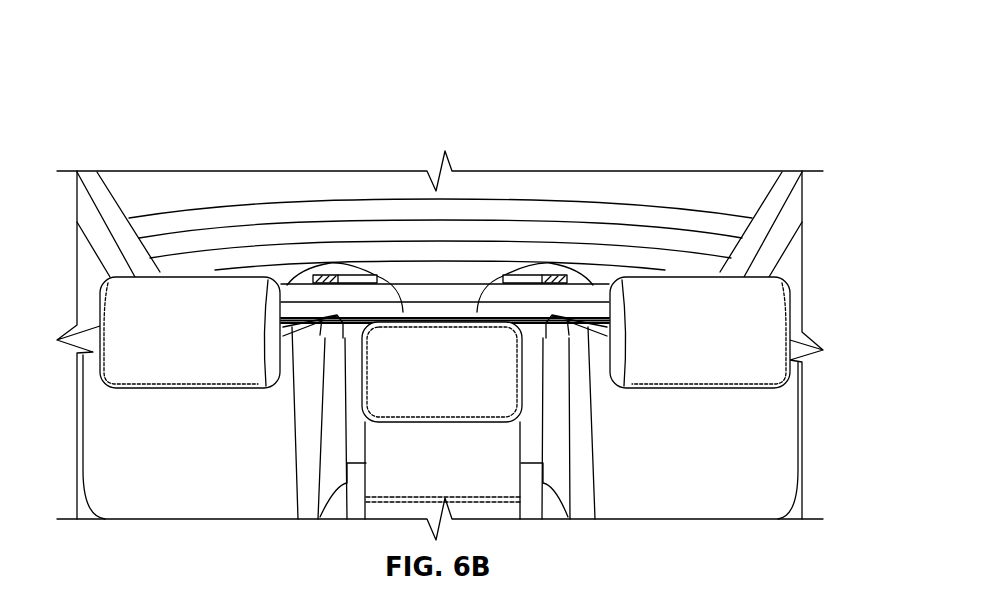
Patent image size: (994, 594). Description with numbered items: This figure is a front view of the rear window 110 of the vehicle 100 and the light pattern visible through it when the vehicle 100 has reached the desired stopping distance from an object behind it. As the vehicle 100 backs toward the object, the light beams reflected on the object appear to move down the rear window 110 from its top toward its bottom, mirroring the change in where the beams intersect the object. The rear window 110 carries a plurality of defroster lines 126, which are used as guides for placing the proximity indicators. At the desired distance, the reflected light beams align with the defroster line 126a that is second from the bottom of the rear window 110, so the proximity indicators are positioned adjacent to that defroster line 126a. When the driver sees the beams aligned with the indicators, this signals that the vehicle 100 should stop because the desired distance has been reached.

The vehicle 100 is at (725, 68).
The rear window 110 is at (675, 178).
The defroster lines 126 is at (160, 209).
The defroster line 126a is at (438, 284).